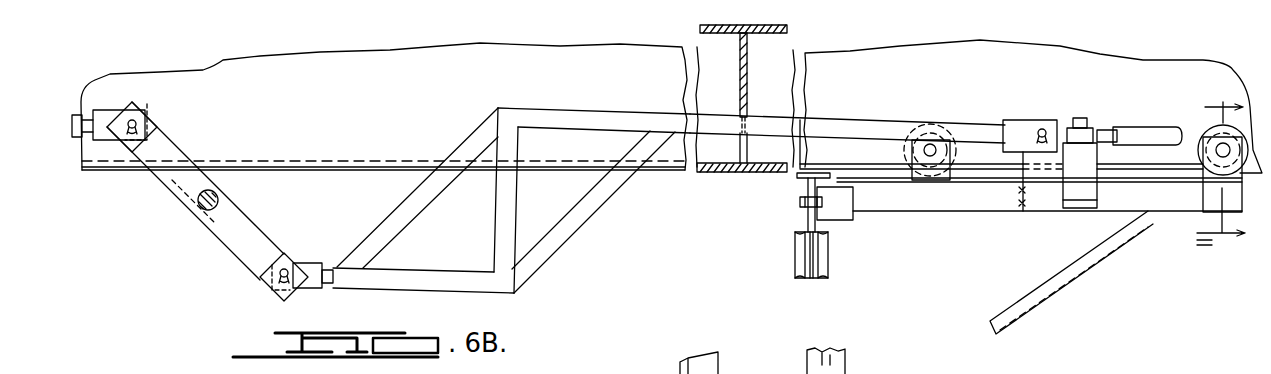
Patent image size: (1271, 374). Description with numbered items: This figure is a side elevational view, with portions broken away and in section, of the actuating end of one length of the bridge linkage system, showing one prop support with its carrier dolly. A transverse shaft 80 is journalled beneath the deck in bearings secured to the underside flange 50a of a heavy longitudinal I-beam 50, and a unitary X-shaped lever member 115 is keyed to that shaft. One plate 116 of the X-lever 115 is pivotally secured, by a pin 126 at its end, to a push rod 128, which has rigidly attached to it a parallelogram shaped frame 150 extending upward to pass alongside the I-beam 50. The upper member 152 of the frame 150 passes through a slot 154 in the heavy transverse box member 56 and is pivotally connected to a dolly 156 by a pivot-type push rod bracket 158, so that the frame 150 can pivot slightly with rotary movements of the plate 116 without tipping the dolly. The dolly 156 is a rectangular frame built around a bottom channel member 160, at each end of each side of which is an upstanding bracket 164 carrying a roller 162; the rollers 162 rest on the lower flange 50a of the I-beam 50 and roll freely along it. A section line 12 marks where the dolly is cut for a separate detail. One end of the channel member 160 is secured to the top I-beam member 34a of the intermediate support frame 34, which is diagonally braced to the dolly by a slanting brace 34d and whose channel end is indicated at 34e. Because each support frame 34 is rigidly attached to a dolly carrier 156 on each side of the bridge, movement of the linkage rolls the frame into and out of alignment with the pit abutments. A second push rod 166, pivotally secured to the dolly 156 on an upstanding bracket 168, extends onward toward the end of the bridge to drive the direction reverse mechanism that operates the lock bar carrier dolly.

The section line 12 is at (1221, 168).
The intermediate support frame 34 is at (784, 260).
The top I-beam member 34a is at (808, 222).
The slanting brace 34d is at (1033, 287).
The channel member 34e is at (828, 260).
The longitudinal I-beam 50 is at (418, 95).
The underside flange 50a is at (657, 165).
The box member 56 is at (745, 63).
The shaft 80 is at (223, 203).
The X-shaped lever member 115 is at (166, 206).
The plate 116 is at (249, 229).
The pin 126 is at (272, 274).
The push rod 128 is at (327, 243).
The parallelogram shaped frame 150 is at (560, 263).
The upper member 152 is at (843, 117).
The slot 154 is at (712, 170).
The dolly 156 is at (996, 225).
The push rod bracket 158 is at (1017, 125).
The bottom channel member 160 is at (940, 195).
The roller 162 is at (950, 122).
The upstanding bracket 164 is at (921, 150).
The second push rod 166 is at (1120, 128).
The upstanding bracket 168 is at (1093, 158).